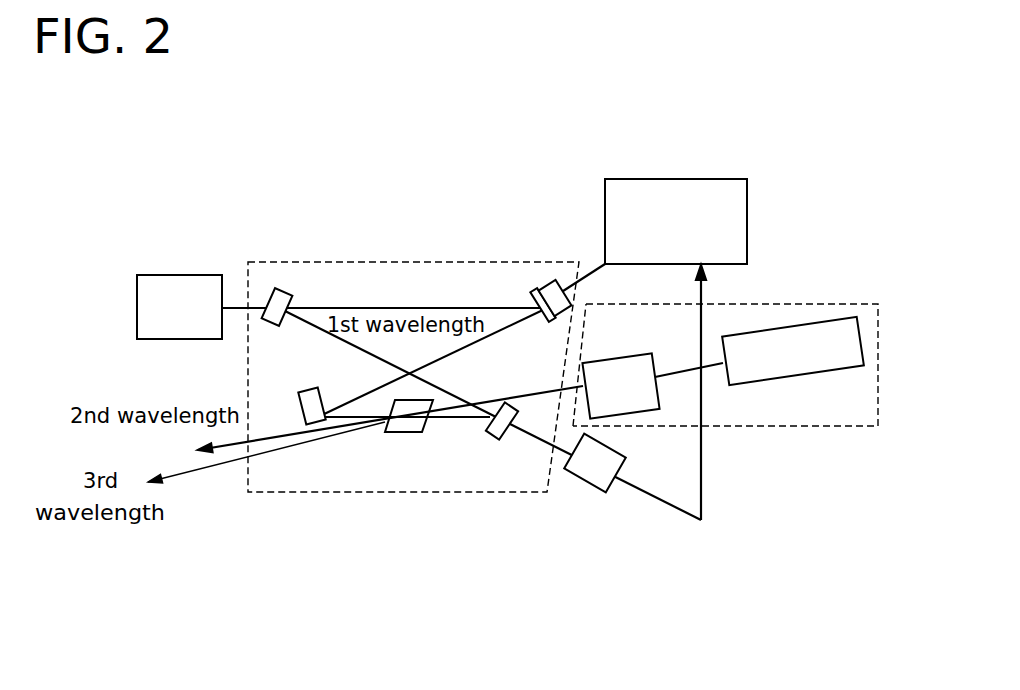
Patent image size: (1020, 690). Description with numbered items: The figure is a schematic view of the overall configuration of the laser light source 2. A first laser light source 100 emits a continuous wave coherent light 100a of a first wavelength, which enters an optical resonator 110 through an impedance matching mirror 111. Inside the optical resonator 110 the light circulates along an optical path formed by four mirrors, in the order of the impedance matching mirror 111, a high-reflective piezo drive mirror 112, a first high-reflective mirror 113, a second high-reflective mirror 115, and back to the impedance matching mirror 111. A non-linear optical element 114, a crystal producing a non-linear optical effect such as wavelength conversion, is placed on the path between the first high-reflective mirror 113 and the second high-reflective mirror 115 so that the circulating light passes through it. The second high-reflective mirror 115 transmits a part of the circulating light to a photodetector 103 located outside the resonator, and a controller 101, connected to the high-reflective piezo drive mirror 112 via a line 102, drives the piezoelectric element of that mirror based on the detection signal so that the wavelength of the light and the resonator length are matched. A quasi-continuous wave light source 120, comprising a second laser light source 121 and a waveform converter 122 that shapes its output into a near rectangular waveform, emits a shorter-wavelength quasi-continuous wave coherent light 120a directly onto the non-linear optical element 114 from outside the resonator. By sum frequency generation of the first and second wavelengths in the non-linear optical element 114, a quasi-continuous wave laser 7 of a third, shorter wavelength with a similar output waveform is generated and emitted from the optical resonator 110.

The laser light source 2 is at (494, 122).
The quasi-continuous wave laser 7 is at (199, 472).
The first laser light source 100 is at (165, 274).
The continuous wave coherent light 100a is at (233, 305).
The controller 101 is at (690, 178).
The line 102 is at (586, 276).
The photodetector 103 is at (622, 449).
The optical resonator 110 is at (373, 261).
The impedance matching mirror 111 is at (288, 298).
The high-reflective piezo drive mirror 112 is at (546, 322).
The first high-reflective mirror 113 is at (308, 390).
The non-linear optical element 114 is at (384, 430).
The second high-reflective mirror 115 is at (490, 438).
The quasi-continuous wave light source 120 is at (836, 303).
The quasi-continuous wave coherent light 120a is at (572, 395).
The second laser light source 121 is at (864, 341).
The waveform converter 122 is at (653, 358).